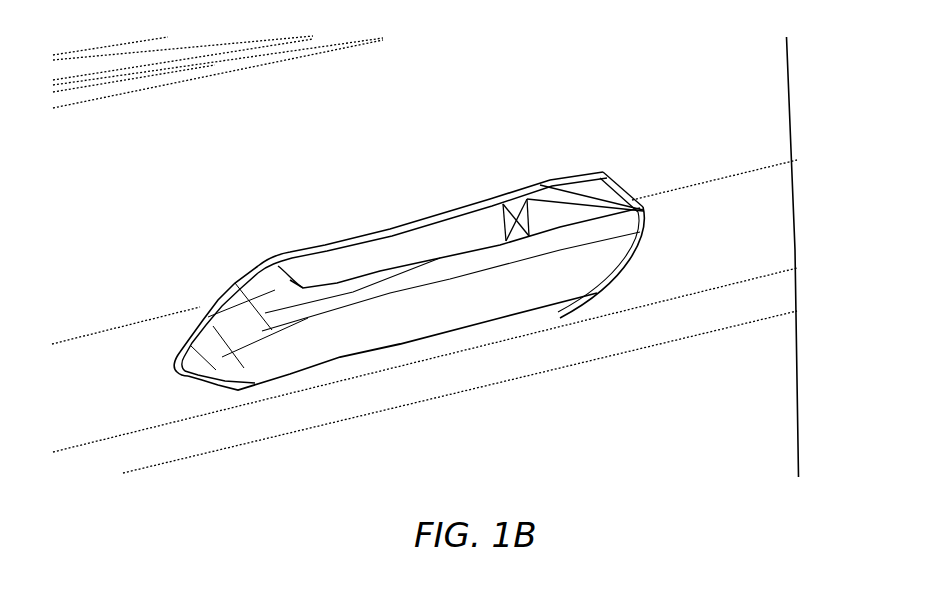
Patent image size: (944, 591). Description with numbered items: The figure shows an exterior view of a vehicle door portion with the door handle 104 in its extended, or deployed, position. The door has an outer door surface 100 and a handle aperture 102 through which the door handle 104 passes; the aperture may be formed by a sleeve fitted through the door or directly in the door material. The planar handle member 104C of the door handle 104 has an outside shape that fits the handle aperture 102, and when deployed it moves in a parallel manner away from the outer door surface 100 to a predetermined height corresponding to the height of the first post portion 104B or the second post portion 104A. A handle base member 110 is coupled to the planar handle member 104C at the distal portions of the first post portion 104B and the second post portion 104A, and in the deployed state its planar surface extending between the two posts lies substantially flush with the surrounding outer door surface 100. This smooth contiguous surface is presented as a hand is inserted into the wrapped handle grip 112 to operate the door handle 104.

The outer door surface 100 is at (760, 52).
The handle aperture 102 is at (611, 175).
The door handle 104 is at (647, 218).
The second post portion 104A is at (218, 328).
The first post portion 104B is at (550, 207).
The planar handle member 104C is at (472, 307).
The handle base member 110 is at (310, 267).
The wrapped handle grip 112 is at (413, 237).